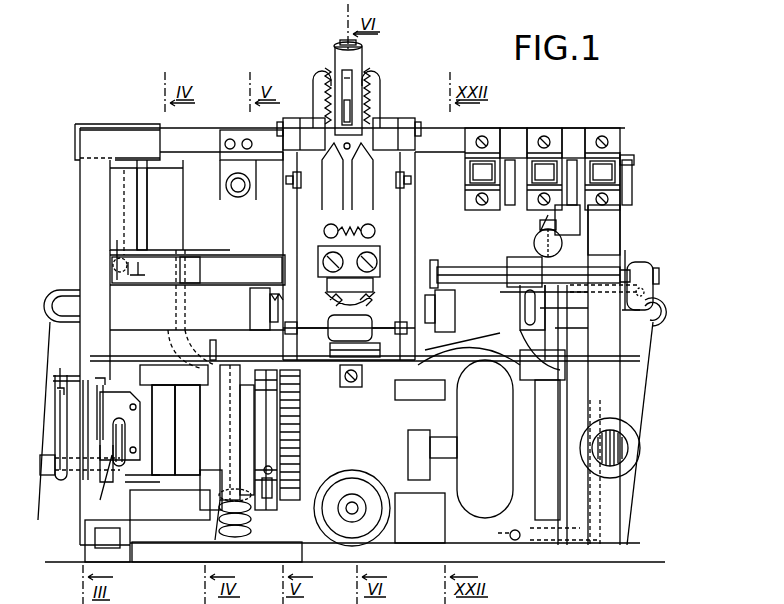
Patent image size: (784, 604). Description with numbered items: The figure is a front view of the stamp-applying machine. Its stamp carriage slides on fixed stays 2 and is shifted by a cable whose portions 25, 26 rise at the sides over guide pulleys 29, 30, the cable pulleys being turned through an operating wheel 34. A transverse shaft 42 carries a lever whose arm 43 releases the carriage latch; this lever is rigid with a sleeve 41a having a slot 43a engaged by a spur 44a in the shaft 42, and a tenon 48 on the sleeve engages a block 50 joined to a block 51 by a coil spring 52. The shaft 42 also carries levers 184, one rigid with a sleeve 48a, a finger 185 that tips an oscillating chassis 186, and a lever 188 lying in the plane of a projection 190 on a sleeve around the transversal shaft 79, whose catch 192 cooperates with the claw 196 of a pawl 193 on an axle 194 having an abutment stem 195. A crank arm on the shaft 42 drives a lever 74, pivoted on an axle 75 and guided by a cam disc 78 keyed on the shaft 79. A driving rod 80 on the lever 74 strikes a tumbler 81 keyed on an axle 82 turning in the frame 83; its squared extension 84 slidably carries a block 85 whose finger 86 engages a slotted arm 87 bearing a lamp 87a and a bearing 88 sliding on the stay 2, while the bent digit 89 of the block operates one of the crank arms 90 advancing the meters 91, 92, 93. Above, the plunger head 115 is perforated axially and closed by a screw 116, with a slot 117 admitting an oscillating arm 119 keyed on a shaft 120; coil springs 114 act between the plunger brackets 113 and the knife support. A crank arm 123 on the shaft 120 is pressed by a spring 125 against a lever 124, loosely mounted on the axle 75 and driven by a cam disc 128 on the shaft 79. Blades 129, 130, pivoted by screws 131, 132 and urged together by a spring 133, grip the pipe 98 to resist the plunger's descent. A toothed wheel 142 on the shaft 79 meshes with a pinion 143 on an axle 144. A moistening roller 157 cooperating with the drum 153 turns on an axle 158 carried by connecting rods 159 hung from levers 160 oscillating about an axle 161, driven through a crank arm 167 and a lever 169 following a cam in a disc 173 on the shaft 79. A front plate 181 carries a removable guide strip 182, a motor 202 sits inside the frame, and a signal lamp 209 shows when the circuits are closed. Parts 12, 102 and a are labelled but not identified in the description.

The fixed stays 2 is at (547, 322).
The cam 12 is at (330, 298).
The cable portion 25 is at (50, 340).
The cable portion 26 is at (640, 385).
The guide pulley 29 is at (48, 308).
The guide pulley 30 is at (654, 318).
The operating wheel 34 is at (352, 508).
The sleeve 41a is at (235, 489).
The shaft 42 is at (405, 512).
The arm 43 is at (280, 400).
The slot 43a is at (268, 500).
The spur 44a is at (272, 500).
The tenon 48 is at (225, 498).
The sleeve 48a is at (215, 540).
The block 50 is at (239, 508).
The block 51 is at (232, 537).
The coil spring 52 is at (241, 523).
The lever 74 is at (568, 340).
The axle 75 is at (538, 472).
The disc 78 is at (548, 435).
The shaft 79 is at (252, 438).
The driving rod 80 is at (648, 288).
The tumbler 81 is at (636, 262).
The axle 82 is at (658, 268).
The frame 83 is at (587, 230).
The squared extension 84 is at (478, 267).
The block 85 is at (510, 265).
The finger 86 is at (492, 350).
The slotted arm 87 is at (517, 309).
The lamp 87a is at (540, 226).
The bearing 88 is at (502, 307).
The bent digit 89 is at (548, 235).
The crank arms 90 is at (640, 188).
The meter 91 is at (476, 160).
The meter 92 is at (536, 160).
The meter 93 is at (596, 160).
The pipe 98 is at (346, 150).
The plate 102 is at (330, 284).
The brackets 113 is at (380, 78).
The coil springs 114 is at (372, 98).
The head 115 is at (352, 58).
The screw 116 is at (338, 44).
The slot 117 is at (352, 114).
The oscillating arm 119 is at (342, 98).
The shaft 120 is at (75, 141).
The crank arm 123 is at (148, 230).
The lever 124 is at (140, 300).
The spring 125 is at (128, 252).
The disc 128 is at (159, 430).
The blade 129 is at (330, 176).
The blade 130 is at (360, 176).
The screw 131 is at (322, 258).
The screw 132 is at (380, 260).
The spring 133 is at (328, 226).
The toothed wheel 142 is at (300, 460).
The pinion 143 is at (263, 436).
The axle 144 is at (300, 410).
The drum 153 is at (361, 363).
The moistening roller 157 is at (349, 328).
The axle 158 is at (290, 334).
The connecting rods 159 is at (270, 308).
The lever 160 is at (293, 182).
The axle 161 is at (277, 128).
The crank arm 167 is at (226, 193).
The lever 169 is at (228, 395).
The disc 173 is at (185, 430).
The plate 181 is at (480, 376).
The strip of metal 182 is at (422, 422).
The levers 184 is at (213, 340).
The finger 185 is at (100, 500).
The oscillating chassis 186 is at (140, 430).
The lever 188 is at (58, 412).
The projection 190 is at (50, 376).
The catch 192 is at (126, 440).
The pawl 193 is at (107, 541).
The axle 194 is at (142, 520).
The abutment stem 195 is at (67, 465).
The claw 196 is at (151, 472).
The motor 202 is at (374, 345).
The signal lamp 209 is at (618, 445).
The part a is at (242, 214).